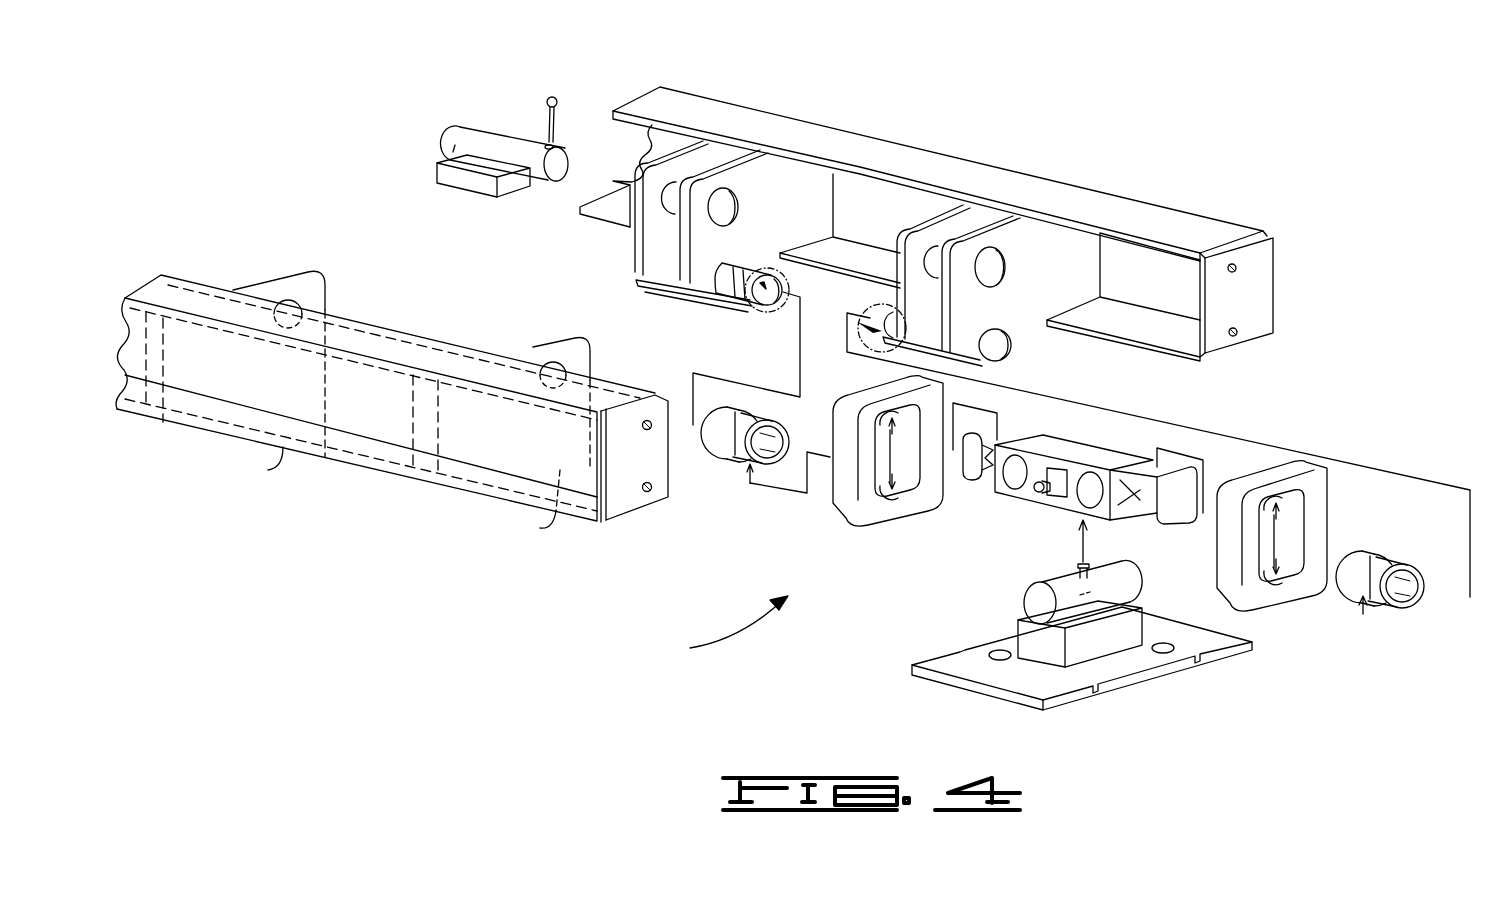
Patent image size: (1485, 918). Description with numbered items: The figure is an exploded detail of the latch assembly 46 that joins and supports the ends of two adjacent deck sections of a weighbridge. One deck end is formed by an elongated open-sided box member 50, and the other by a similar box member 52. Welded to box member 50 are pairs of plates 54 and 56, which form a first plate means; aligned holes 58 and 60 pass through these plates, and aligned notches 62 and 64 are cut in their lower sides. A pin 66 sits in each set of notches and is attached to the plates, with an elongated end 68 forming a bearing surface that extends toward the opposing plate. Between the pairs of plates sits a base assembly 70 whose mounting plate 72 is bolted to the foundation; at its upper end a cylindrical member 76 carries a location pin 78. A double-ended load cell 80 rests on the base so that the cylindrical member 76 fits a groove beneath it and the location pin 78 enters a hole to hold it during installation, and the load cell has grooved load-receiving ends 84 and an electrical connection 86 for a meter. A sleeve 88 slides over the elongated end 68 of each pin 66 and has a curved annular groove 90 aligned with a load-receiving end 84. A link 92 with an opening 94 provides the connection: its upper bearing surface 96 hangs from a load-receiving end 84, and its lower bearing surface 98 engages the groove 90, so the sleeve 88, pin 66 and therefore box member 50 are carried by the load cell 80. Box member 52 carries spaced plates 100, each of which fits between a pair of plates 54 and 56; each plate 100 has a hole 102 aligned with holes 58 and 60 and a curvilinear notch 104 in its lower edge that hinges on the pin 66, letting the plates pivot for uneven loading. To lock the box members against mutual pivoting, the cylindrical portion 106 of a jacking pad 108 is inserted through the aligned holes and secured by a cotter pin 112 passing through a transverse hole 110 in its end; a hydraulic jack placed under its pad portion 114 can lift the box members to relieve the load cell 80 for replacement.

The latch assembly 46 is at (720, 628).
The box member 50 is at (1262, 270).
The box member 52 is at (617, 505).
The plate 54 is at (700, 160).
The plate 56 is at (777, 175).
The hole 58 is at (675, 185).
The hole 60 is at (740, 212).
The notch 62 is at (672, 287).
The notch 64 is at (672, 267).
The pin 66 is at (702, 305).
The elongated end 68 is at (785, 318).
The base assembly 70 is at (1015, 680).
The mounting plate 72 is at (1060, 680).
The cylindrical member 76 is at (1038, 605).
The location pin 78 is at (1080, 572).
The load cell 80 is at (1080, 450).
The load-receiving ends 84 is at (975, 468).
The electrical connection 86 is at (1045, 492).
The sleeve 88 is at (717, 455).
The groove 90 is at (734, 453).
The link 92 is at (863, 517).
The opening 94 is at (905, 495).
The upper bearing surface 96 is at (887, 415).
The lower bearing surface 98 is at (908, 500).
The plate 100 is at (285, 280).
The hole 102 is at (318, 294).
The clip leg 104 is at (283, 470).
The cylindrical portion 106 is at (505, 118).
The jacking pad 108 is at (452, 130).
The transverse hole 110 is at (553, 147).
The cotter pin 112 is at (549, 97).
The pad portion 114 is at (462, 176).